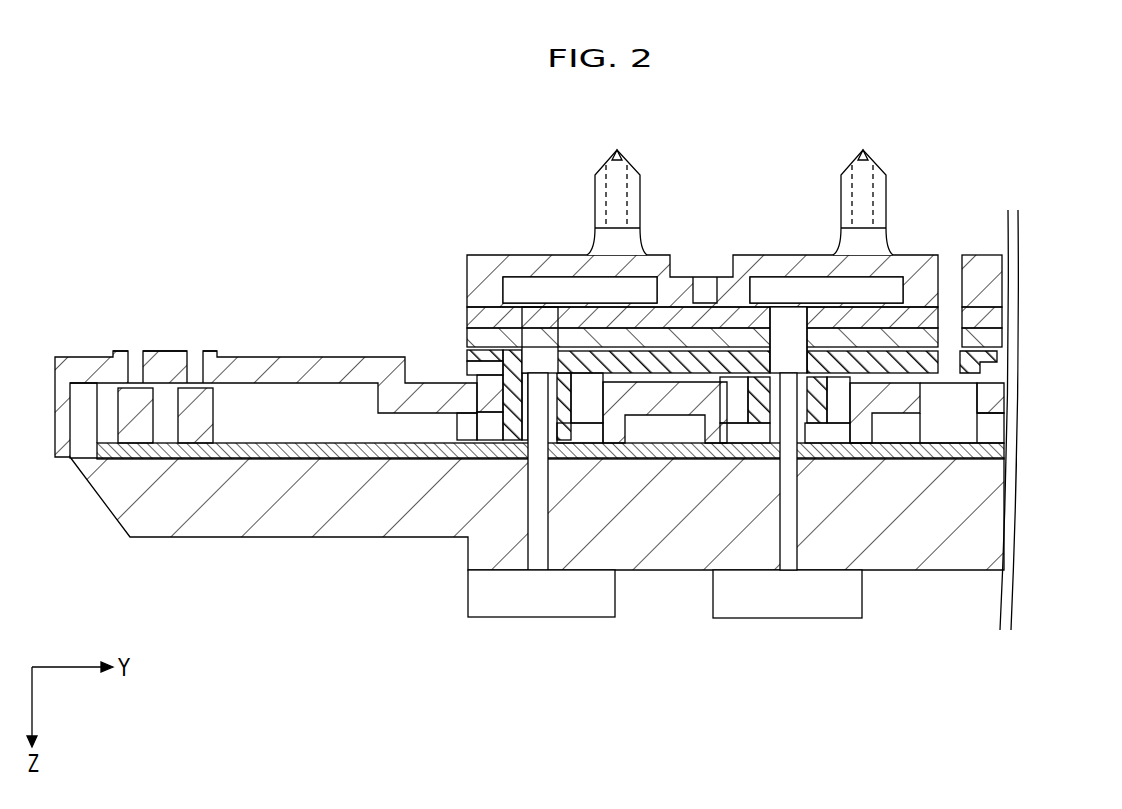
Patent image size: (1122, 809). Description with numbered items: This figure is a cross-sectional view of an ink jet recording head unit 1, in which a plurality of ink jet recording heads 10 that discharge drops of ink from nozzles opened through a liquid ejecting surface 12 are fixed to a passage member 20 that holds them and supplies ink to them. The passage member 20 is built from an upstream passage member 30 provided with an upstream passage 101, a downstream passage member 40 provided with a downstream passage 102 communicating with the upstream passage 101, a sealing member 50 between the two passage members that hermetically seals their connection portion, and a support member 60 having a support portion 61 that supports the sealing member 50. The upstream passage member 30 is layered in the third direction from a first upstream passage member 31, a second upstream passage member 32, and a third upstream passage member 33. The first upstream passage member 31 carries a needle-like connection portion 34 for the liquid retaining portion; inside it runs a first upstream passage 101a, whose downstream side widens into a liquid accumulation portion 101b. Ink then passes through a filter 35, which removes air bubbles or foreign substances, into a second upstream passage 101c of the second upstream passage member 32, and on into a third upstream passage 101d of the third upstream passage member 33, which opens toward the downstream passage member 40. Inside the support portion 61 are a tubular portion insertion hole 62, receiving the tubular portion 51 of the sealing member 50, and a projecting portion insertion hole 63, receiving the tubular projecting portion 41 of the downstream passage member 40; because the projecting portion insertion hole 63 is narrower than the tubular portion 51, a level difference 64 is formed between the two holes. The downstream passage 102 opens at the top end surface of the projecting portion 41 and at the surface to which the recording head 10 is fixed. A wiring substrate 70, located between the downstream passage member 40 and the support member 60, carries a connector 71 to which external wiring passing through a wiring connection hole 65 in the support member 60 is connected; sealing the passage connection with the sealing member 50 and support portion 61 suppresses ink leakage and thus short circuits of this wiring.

The ink jet recording head unit 1 is at (997, 130).
The ink jet recording head 10 is at (795, 618).
The liquid ejecting surface 12 is at (477, 620).
The passage member 20 is at (669, 238).
The upstream passage member 30 is at (669, 278).
The first upstream passage member 31 is at (472, 268).
The second upstream passage member 32 is at (472, 308).
The third upstream passage member 33 is at (472, 336).
The connection portion 34 is at (600, 192).
The filter 35 is at (522, 290).
The downstream passage member 40 is at (280, 520).
The projecting portion 41 is at (905, 460).
The sealing member 50 is at (472, 362).
The tubular portion 51 is at (590, 450).
The support member 60 is at (242, 356).
The support portion 61 is at (462, 425).
The tubular portion insertion hole 62 is at (490, 400).
The projecting portion insertion hole 63 is at (530, 420).
The level difference 64 is at (507, 415).
The wiring connection hole 65 is at (130, 355).
The wiring substrate 70 is at (205, 440).
The connector 71 is at (128, 430).
The upstream passage 101 is at (798, 338).
The first upstream passage 101a is at (860, 165).
The liquid accumulation portion 101b is at (885, 292).
The second upstream passage 101c is at (793, 340).
The third upstream passage 101d is at (782, 345).
The downstream passage 102 is at (540, 480).